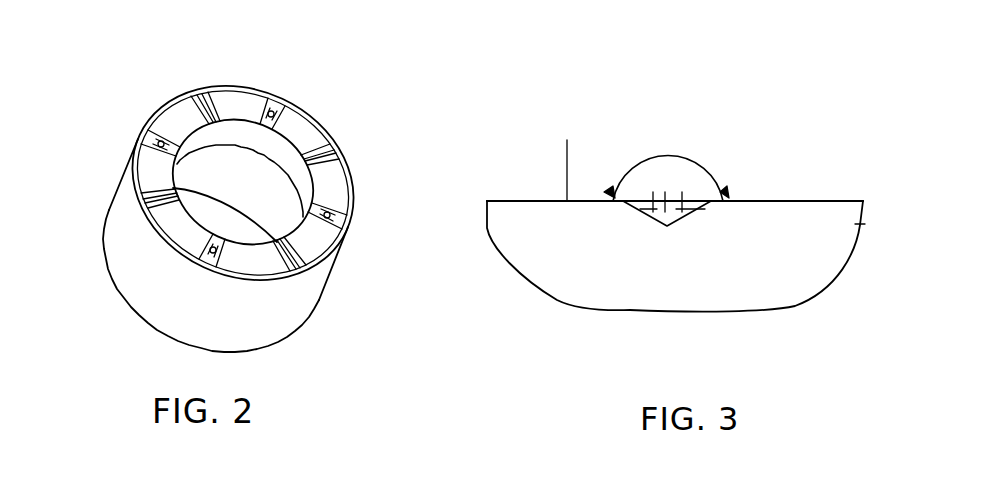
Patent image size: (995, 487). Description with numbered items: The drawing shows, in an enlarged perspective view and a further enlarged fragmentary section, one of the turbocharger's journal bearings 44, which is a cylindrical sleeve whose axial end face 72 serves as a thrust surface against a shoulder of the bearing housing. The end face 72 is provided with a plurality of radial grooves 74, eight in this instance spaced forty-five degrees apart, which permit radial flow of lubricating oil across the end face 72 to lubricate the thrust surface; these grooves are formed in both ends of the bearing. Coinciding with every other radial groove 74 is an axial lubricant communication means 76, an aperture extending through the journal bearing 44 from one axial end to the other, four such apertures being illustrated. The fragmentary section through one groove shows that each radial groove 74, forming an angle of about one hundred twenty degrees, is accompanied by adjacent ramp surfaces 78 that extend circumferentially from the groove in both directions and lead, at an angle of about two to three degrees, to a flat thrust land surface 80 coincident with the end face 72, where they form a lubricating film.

In FIG. 2, the journal bearing 44 is at (139, 50).
In FIG. 3, the journal bearing 44 is at (572, 280).
In FIG. 2, the axial end face 72 is at (242, 100).
In FIG. 2, the radial grooves 74 is at (198, 92).
In FIG. 3, the radial grooves 74 is at (660, 221).
In FIG. 2, the axial lubricant communication means 76 is at (280, 112).
In FIG. 3, the ramp surfaces 78 is at (613, 193).
In FIG. 3, the flat thrust land surface 80 is at (523, 200).